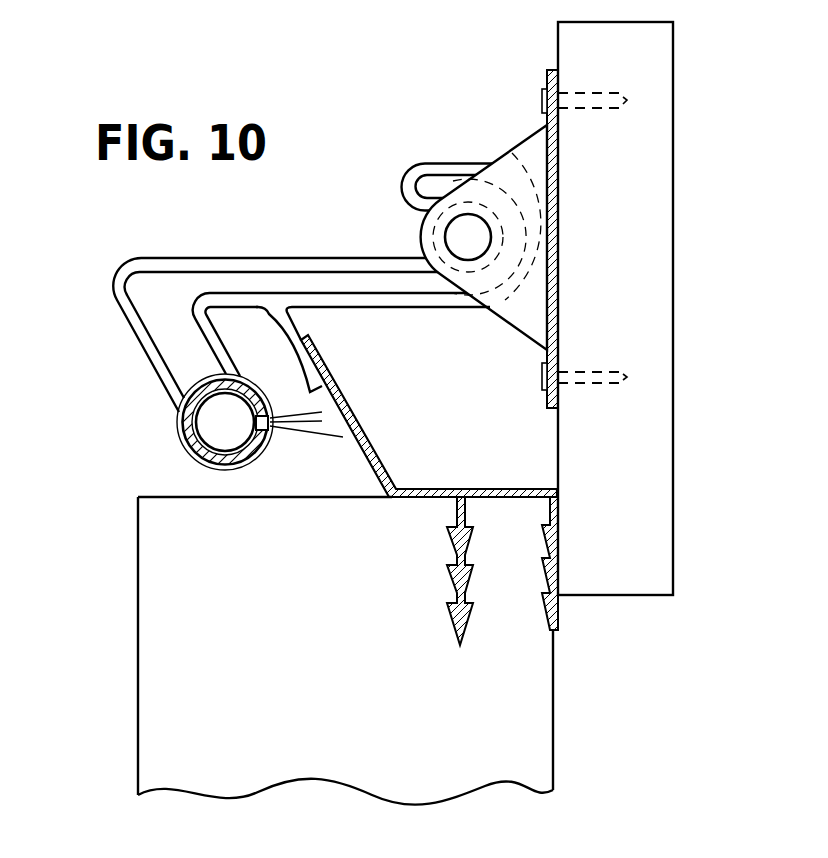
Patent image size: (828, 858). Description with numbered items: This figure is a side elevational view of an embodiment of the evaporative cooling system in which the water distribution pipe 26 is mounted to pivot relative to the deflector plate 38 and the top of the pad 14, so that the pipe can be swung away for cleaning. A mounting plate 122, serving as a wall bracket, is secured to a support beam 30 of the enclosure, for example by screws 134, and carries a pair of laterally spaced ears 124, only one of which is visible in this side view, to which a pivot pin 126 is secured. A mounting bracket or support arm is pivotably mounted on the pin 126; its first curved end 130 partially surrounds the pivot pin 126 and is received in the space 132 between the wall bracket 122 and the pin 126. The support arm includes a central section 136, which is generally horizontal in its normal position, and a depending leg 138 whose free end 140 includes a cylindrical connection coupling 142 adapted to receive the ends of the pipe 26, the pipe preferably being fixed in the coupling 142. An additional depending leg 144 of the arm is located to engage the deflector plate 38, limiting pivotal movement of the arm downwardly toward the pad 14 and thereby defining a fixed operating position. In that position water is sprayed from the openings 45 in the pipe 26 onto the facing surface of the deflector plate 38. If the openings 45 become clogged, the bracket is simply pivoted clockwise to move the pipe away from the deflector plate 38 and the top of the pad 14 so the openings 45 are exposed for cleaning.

The pad 14 is at (538, 731).
The pipe 26 is at (217, 458).
The support beam 30 is at (648, 213).
The deflector plate 38 is at (352, 420).
The openings 45 is at (270, 433).
The mounting plate 122 is at (543, 100).
The ears 124 is at (507, 157).
The pivot pin 126 is at (452, 238).
The first curved end 130 is at (433, 168).
The space 132 is at (512, 153).
The screws 134 is at (596, 388).
The central section 136 is at (249, 298).
The depending leg 138 is at (133, 270).
The free end 140 is at (201, 472).
The cylindrical connection coupling 142 is at (185, 455).
The additional depending leg 144 is at (290, 318).